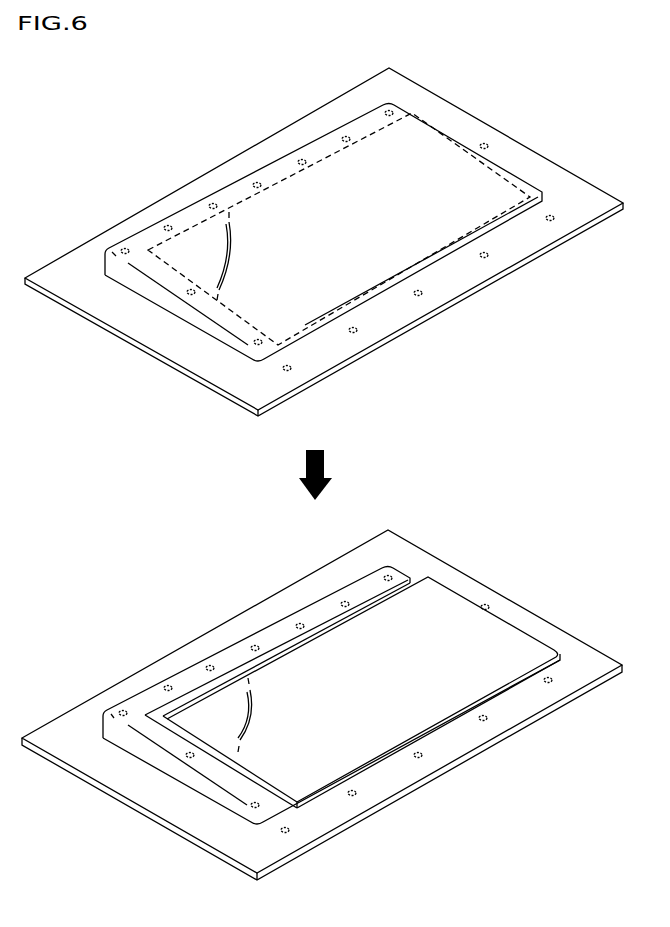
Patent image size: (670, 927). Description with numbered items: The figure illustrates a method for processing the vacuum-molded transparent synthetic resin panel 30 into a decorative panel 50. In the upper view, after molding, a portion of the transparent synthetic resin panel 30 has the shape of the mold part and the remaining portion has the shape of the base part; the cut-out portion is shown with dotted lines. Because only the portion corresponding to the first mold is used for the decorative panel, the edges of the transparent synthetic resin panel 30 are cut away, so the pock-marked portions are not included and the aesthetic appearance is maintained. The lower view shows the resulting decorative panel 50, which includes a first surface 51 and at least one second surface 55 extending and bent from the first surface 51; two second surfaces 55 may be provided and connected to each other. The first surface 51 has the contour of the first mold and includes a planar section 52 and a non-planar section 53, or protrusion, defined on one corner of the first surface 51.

The transparent synthetic resin panel 30 is at (213, 138).
The decorative panel 50 is at (261, 684).
The first surface 51 is at (277, 684).
The planar section 52 is at (280, 667).
The non-planar section 53 is at (228, 700).
The second surface 55 is at (522, 680).